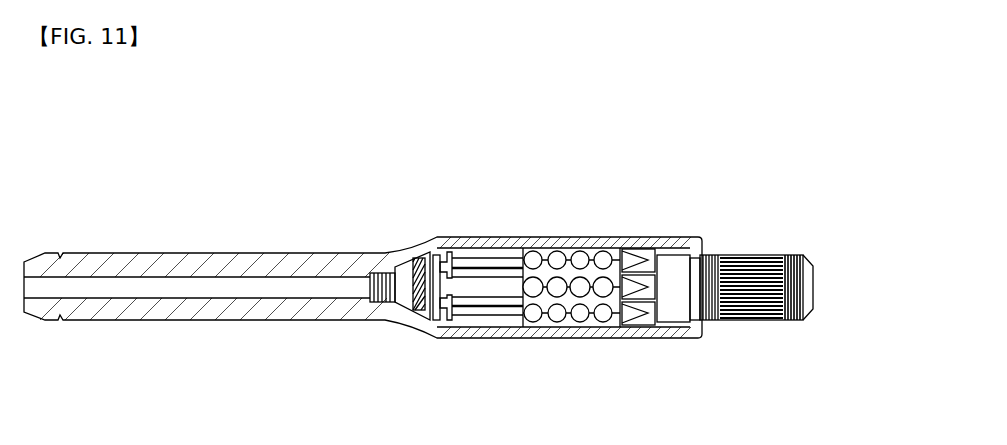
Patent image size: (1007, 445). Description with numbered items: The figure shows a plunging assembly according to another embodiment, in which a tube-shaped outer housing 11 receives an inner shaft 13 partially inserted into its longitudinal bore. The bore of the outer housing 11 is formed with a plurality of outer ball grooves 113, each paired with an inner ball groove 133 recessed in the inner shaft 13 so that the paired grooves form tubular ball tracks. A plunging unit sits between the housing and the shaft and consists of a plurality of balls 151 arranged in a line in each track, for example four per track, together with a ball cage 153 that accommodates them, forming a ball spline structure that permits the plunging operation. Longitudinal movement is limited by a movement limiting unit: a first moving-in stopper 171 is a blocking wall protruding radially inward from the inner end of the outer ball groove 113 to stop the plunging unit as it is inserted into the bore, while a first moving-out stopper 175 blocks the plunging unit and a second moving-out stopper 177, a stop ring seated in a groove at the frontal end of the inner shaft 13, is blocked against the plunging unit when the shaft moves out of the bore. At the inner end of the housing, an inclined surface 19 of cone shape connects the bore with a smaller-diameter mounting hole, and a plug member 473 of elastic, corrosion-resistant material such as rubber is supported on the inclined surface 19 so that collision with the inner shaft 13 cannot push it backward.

The outer housing 11 is at (478, 248).
The inner shaft 13 is at (757, 256).
The inclined surface 19 is at (413, 258).
The outer ball groove 113 is at (485, 292).
The inner ball groove 133 is at (628, 250).
The ball 151 is at (568, 300).
The ball cage 153 is at (600, 327).
The first moving-in stopper 171 is at (508, 243).
The first moving-out stopper 175 is at (700, 250).
The second moving-out stopper 177 is at (432, 318).
The plug member 473 is at (393, 262).